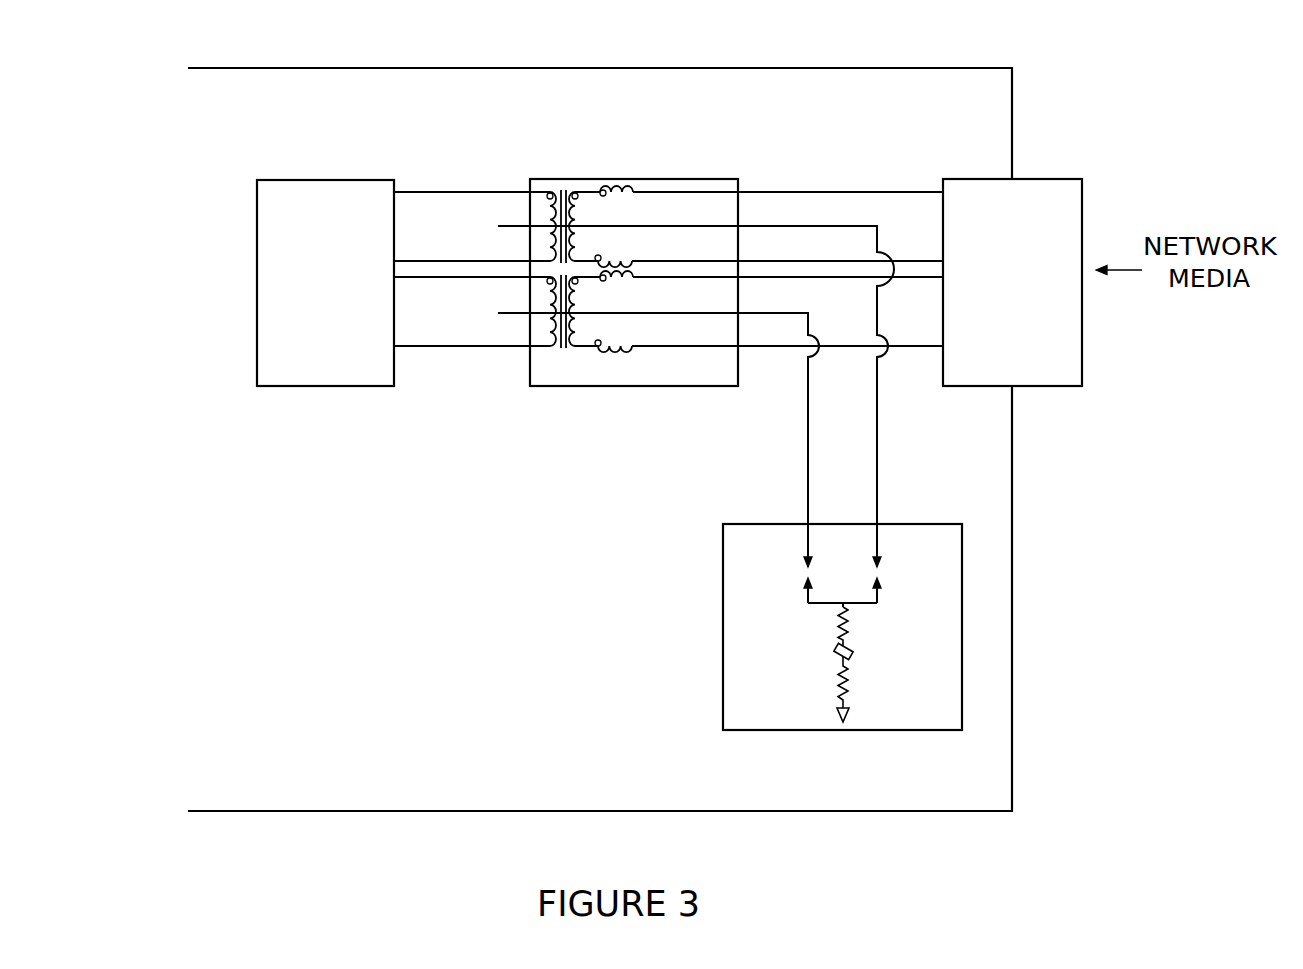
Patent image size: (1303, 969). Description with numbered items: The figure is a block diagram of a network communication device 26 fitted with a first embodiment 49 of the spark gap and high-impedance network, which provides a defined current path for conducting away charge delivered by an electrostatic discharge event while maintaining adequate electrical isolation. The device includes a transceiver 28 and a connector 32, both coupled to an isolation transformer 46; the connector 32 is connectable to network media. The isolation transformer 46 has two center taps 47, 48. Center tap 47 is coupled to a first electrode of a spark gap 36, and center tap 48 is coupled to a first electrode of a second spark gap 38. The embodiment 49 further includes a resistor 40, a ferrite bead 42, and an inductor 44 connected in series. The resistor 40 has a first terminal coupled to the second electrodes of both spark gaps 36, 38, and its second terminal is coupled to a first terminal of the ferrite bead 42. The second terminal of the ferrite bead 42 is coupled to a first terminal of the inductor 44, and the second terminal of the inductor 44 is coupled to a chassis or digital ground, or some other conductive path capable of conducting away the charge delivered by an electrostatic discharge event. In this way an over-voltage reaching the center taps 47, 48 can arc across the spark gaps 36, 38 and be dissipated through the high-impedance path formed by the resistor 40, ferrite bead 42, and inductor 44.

The network communication device 26 is at (287, 830).
The transceiver 28 is at (318, 386).
The connector 32 is at (978, 386).
The spark gap 36 is at (795, 577).
The spark gap 38 is at (890, 577).
The resistor 40 is at (840, 621).
The ferrite bead 42 is at (853, 655).
The inductor 44 is at (843, 682).
The isolation transformer 46 is at (653, 386).
The center tap 47 is at (633, 308).
The center tap 48 is at (627, 223).
The first embodiment of spark gap and high-impedance network 49 is at (815, 730).